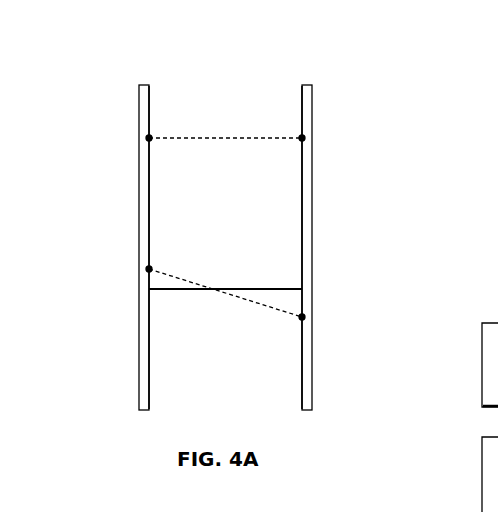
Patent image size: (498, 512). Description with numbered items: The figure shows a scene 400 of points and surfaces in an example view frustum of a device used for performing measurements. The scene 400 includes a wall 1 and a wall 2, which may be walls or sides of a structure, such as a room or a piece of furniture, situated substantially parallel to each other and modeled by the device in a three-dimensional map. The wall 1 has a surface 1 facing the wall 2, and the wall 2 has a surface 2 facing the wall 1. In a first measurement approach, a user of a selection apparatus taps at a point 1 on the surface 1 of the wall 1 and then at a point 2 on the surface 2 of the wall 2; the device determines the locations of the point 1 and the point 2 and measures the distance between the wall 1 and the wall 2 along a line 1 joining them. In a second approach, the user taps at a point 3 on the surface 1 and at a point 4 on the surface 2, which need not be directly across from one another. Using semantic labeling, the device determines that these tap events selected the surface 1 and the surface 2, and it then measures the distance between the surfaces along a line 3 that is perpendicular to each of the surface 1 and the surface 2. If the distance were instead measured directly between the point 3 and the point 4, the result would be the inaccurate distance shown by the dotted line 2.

The view frustum scene 400 is at (275, 43).
The element wall 1 is at (139, 205).
The element wall 2 is at (312, 242).
The element surface 1 is at (150, 100).
The element surface 2 is at (302, 392).
The element line 1 is at (178, 138).
The dotted line 2 is at (257, 302).
The element line 3 is at (182, 292).
The element point 1 is at (143, 140).
The element point 2 is at (308, 140).
The element point 3 is at (143, 272).
The element point 4 is at (308, 318).